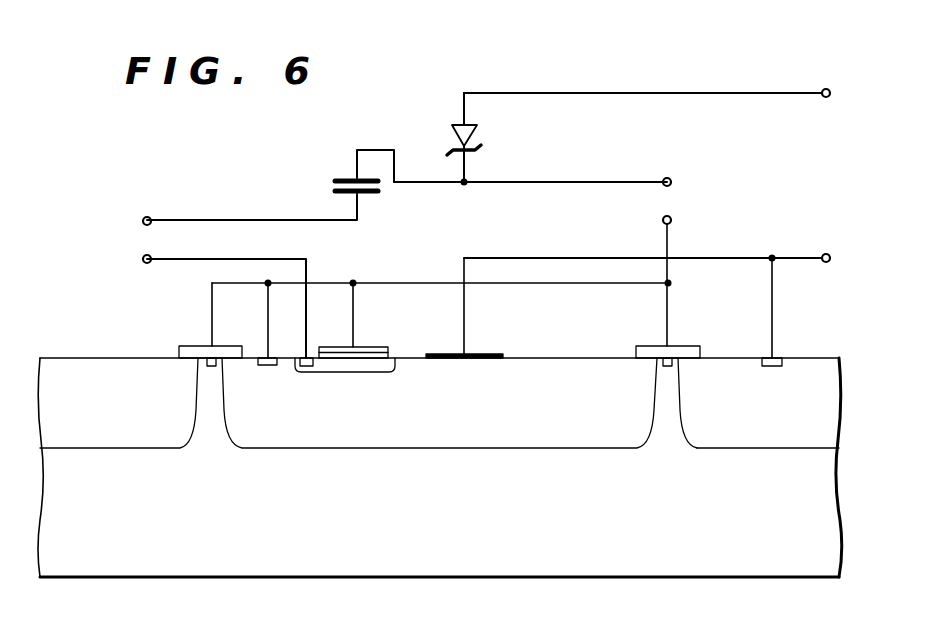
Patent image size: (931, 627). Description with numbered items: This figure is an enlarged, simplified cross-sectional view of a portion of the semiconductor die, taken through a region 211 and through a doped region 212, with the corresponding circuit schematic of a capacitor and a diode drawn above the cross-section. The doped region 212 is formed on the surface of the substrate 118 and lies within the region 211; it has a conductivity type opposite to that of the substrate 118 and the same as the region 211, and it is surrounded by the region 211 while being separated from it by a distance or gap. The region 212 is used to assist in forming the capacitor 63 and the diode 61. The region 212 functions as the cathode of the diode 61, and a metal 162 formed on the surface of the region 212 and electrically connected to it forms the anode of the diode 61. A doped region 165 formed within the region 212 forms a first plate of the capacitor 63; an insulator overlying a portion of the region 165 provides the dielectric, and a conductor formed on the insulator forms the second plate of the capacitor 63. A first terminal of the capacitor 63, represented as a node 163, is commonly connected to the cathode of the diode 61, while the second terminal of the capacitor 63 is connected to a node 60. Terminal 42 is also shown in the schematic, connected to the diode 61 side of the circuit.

The terminal 42 is at (826, 98).
The node 60 is at (143, 225).
The diode 61 is at (483, 131).
The capacitor 63 is at (333, 182).
The substrate 118 is at (482, 548).
The metal 162 is at (488, 352).
The node 163 is at (671, 186).
The doped region 165 is at (352, 374).
The region 211 is at (115, 438).
The doped region 212 is at (462, 440).